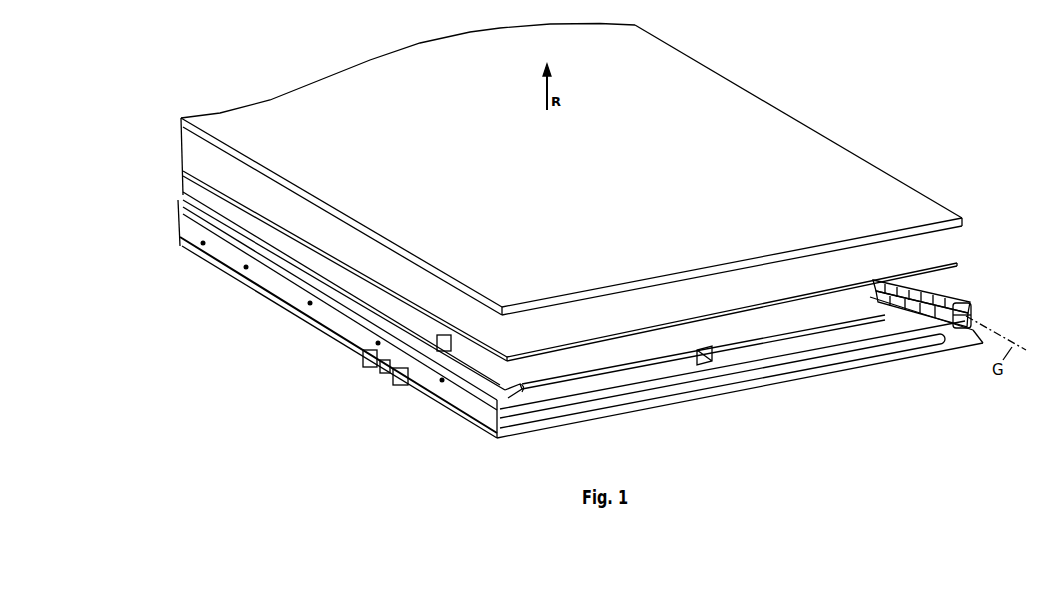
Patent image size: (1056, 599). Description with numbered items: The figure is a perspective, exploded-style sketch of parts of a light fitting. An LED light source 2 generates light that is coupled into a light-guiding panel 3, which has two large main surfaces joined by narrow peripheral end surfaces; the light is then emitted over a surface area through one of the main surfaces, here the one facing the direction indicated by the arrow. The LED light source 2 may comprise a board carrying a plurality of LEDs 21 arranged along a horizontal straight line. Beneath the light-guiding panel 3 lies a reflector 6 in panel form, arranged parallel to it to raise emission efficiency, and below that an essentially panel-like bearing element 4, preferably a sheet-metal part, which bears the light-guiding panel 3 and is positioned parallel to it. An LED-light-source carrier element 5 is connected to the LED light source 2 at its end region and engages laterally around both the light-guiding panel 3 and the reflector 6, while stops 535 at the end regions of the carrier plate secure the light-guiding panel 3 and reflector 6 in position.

The light-guiding panel 3 is at (880, 181).
The reflector 6 is at (790, 278).
The bearing element 4 is at (733, 330).
The LED-light-source carrier element 5 is at (948, 340).
The LED light source 2 is at (939, 298).
The LEDs 21 is at (955, 297).
The stops 535 is at (971, 313).